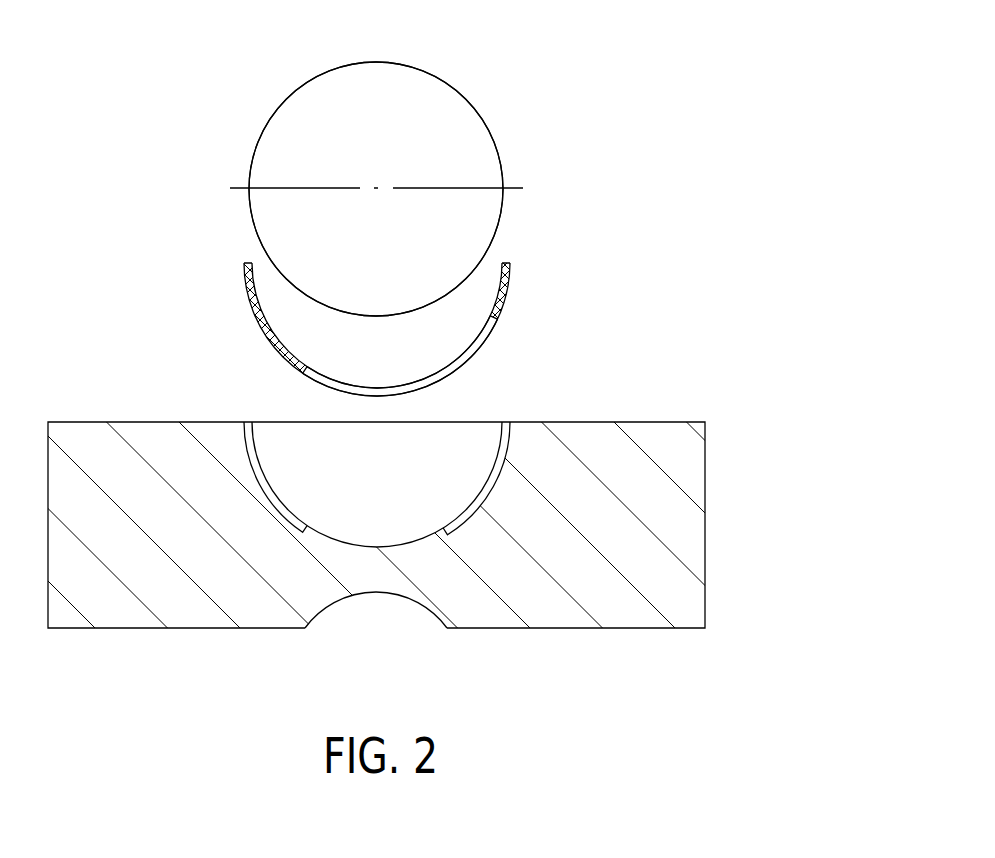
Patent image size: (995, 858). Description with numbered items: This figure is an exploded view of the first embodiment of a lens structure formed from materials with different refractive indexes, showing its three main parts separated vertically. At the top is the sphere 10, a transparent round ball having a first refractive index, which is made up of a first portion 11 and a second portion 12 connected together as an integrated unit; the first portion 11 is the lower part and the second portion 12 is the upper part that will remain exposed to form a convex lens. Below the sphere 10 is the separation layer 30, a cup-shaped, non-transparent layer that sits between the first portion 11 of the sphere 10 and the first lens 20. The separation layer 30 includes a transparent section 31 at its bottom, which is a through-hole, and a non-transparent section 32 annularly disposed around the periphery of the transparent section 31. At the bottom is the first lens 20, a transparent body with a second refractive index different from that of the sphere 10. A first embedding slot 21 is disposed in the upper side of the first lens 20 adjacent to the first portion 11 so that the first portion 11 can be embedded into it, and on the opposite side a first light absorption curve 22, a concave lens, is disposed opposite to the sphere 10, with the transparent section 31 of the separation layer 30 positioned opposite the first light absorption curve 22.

The sphere 10 is at (273, 150).
The first portion 11 is at (502, 215).
The second portion 12 is at (480, 117).
The first lens 20 is at (688, 457).
The first embedding slot 21 is at (282, 422).
The first light absorption curve 22 is at (408, 598).
The separation layer 30 is at (246, 294).
The transparent section 31 is at (427, 383).
The non-transparent section 32 is at (500, 310).